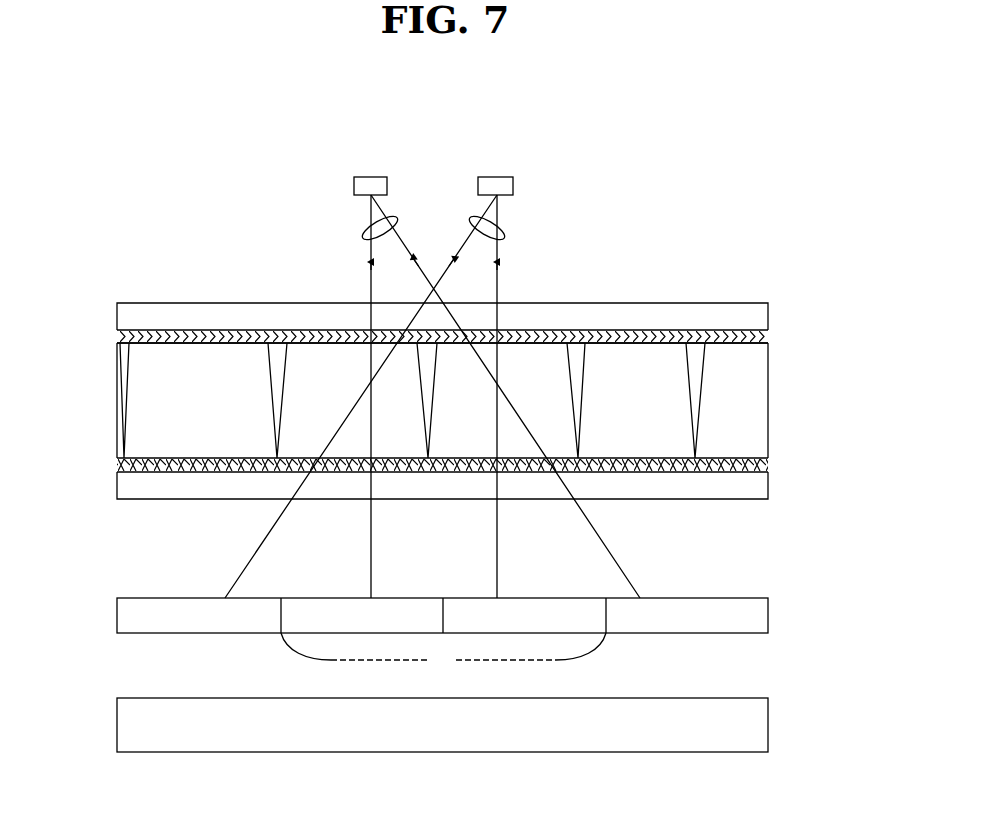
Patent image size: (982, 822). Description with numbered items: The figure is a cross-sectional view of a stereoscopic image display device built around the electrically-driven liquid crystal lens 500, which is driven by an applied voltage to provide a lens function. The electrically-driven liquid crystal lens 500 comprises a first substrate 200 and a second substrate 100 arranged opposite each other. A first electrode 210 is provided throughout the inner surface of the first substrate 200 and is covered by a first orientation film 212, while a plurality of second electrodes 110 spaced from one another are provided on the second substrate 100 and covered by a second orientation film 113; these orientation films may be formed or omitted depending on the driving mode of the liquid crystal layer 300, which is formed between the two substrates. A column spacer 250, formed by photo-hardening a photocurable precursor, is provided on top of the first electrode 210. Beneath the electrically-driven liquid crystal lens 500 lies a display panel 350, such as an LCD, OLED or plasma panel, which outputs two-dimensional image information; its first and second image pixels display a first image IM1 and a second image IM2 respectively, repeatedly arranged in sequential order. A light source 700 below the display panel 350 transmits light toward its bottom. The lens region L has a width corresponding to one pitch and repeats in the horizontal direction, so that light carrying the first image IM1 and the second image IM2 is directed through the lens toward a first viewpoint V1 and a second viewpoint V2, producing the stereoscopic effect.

The second substrate 100 is at (474, 490).
The second electrode 110 is at (768, 472).
The second orientation film 113 is at (768, 462).
The first substrate 200 is at (768, 313).
The first electrode 210 is at (768, 333).
The first orientation film 212 is at (768, 343).
The column spacer 250 is at (120, 402).
The liquid crystal layer 300 is at (755, 403).
The display panel 350 is at (768, 617).
The electrically-driven liquid crystal lens 500 is at (466, 405).
The light source 700 is at (768, 725).
The first viewpoint V1 is at (370, 174).
The second viewpoint V2 is at (495, 174).
The first image IM1 is at (364, 228).
The second image IM2 is at (504, 228).
The lens region L is at (443, 651).